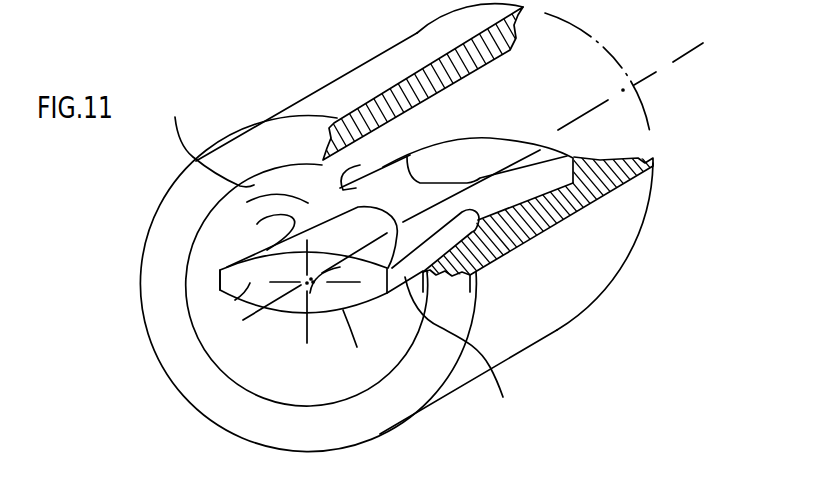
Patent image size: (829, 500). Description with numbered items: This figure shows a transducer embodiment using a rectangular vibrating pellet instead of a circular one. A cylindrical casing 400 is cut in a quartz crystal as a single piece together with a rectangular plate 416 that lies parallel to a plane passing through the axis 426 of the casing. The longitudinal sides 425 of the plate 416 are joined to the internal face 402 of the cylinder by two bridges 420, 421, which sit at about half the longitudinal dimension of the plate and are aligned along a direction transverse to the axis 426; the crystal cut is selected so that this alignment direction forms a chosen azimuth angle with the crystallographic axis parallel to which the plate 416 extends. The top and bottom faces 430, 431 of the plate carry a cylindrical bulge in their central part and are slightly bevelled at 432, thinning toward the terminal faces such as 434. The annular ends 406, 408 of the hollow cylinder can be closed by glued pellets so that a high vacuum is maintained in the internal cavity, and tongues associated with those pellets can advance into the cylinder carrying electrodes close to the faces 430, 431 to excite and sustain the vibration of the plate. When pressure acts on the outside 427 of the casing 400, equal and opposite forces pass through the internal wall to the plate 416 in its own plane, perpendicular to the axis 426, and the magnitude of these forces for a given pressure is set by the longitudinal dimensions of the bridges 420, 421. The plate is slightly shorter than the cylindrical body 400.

The cylindrical casing 400 is at (606, 223).
The internal face 402 is at (198, 138).
The annular end 406 is at (400, 385).
The annular end 408 is at (653, 164).
The rectangular plate 416 is at (227, 281).
The bridge 420 is at (247, 202).
The bridge 421 is at (545, 258).
The longitudinal sides 425 is at (463, 351).
The axis 426 is at (662, 68).
The outside 427 is at (557, 323).
The top face 430 is at (380, 170).
The bottom face 431 is at (343, 310).
The bevel 432 is at (310, 285).
The terminal face 434 is at (275, 285).